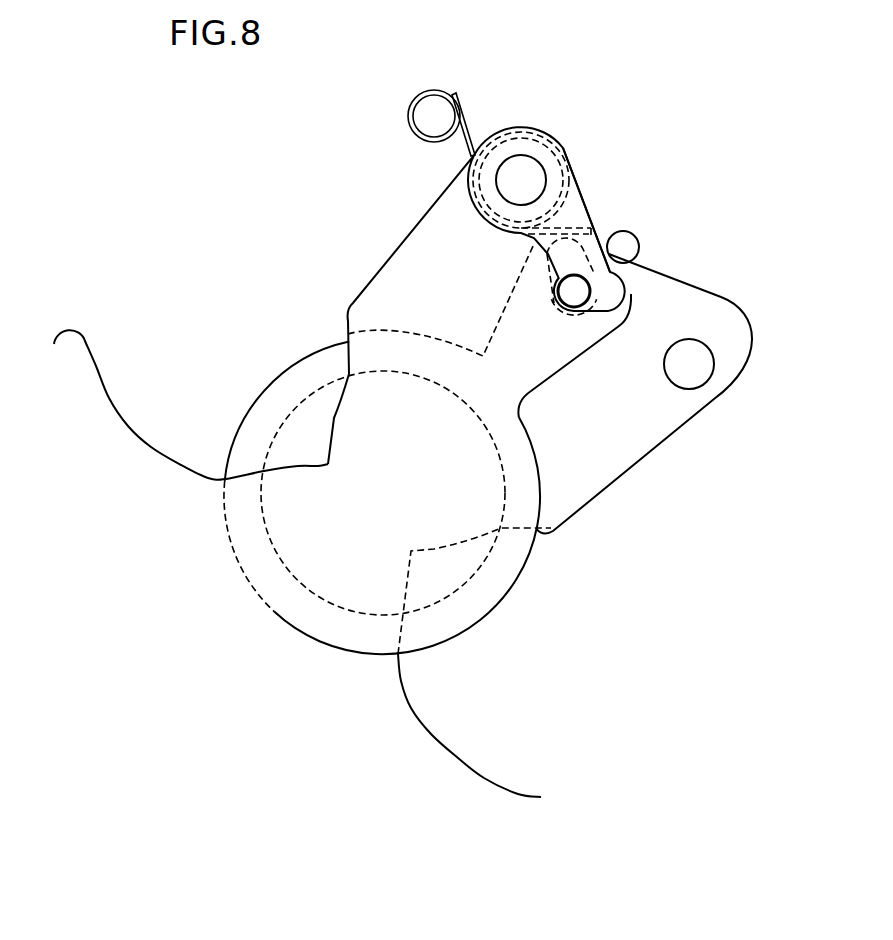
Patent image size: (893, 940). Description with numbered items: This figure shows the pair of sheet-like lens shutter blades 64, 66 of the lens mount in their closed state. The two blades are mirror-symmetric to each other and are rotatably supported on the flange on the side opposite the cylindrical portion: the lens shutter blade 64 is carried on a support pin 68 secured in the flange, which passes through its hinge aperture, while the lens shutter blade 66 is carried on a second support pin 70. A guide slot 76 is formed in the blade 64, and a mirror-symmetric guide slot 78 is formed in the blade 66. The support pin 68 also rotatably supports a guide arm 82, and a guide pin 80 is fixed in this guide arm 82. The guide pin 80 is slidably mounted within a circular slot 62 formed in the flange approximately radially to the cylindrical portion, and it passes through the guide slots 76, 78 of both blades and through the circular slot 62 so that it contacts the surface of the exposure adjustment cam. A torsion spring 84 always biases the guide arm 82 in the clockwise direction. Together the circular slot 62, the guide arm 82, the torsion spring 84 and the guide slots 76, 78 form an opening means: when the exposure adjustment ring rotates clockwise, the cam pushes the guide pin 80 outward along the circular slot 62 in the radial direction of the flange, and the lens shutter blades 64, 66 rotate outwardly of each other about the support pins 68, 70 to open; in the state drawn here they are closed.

The circular slot 62 is at (633, 237).
The lens shutter blade 64 is at (410, 250).
The lens shutter blade 66 is at (613, 468).
The support pin 68 is at (523, 167).
The support pin 70 is at (697, 377).
The guide slot 76 is at (580, 290).
The guide slot 78 is at (577, 233).
The guide pin 80 is at (625, 268).
The guide arm 82 is at (575, 215).
The torsion spring 84 is at (521, 131).